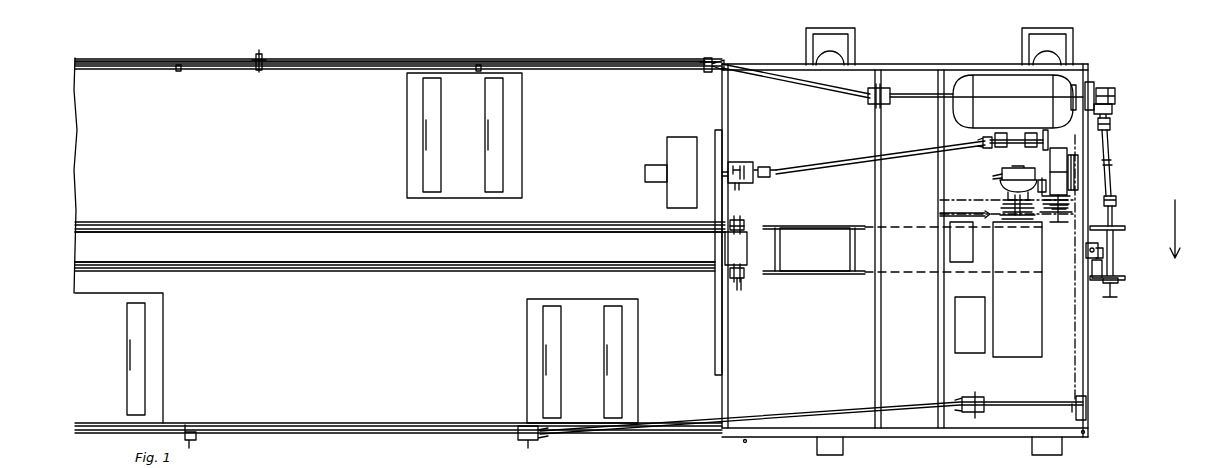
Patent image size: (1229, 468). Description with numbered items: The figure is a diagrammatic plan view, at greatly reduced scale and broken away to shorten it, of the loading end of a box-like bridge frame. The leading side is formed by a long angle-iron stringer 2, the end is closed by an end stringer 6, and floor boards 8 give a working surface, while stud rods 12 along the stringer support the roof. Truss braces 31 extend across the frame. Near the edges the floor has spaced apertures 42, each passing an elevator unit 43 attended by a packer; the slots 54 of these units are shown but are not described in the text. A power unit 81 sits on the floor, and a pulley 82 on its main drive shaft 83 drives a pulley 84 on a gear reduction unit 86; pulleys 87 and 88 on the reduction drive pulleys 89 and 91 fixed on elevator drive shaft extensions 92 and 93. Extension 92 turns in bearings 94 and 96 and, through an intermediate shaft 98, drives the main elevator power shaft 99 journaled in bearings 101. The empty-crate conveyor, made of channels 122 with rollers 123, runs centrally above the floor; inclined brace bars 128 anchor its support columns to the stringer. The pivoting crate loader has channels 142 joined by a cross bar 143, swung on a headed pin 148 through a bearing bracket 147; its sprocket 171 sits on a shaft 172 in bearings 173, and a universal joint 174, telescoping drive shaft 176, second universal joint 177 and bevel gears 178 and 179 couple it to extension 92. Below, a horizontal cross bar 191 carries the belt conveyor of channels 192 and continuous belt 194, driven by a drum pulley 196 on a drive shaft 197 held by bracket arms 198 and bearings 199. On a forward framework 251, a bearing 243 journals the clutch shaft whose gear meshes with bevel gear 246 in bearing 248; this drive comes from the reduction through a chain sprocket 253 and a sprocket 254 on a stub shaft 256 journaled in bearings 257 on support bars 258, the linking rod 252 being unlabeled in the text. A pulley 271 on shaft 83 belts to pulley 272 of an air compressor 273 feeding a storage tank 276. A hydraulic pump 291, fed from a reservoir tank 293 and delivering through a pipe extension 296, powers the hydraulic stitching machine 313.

The angle-iron stringer 2 is at (142, 70).
The end stringer 6 is at (1088, 350).
The floor boards 8 is at (398, 379).
The stud rod 12 is at (178, 71).
The truss brace 31 is at (875, 342).
The aperture 42 is at (522, 123).
The elevator unit 43 is at (478, 163).
The bar 54 is at (492, 180).
The power unit 81 is at (1017, 289).
The pulley 82 is at (1005, 210).
The main drive shaft 83 is at (1018, 223).
The pulley 84 is at (1068, 212).
The gear reduction unit 86 is at (1059, 171).
The pulley 87 is at (1059, 161).
The pulley 88 is at (1078, 186).
The pulley 89 is at (1071, 93).
The pulley 91 is at (1076, 415).
The elevator drive shaft extension 92 is at (1000, 97).
The elevator drive shaft extension 93 is at (1008, 403).
The bearing 94 is at (1089, 88).
The bearing 96 is at (889, 102).
The intermediate shaft 98 is at (820, 88).
The main elevator power shaft 99 is at (99, 69).
The bearing 101 is at (260, 71).
The channel 122 is at (835, 227).
The roller 123 is at (790, 227).
The brace bar 128 is at (728, 134).
The channel 142 is at (1120, 282).
The cross bar 143 is at (1092, 274).
The bearing bracket 147 is at (1090, 258).
The headed pin 148 is at (1100, 251).
The sprocket 171 is at (1110, 300).
The shaft 172 is at (1120, 270).
The bearing 173 is at (1125, 216).
The universal joint 174 is at (1116, 201).
The drive shaft 176 is at (1110, 171).
The universal joint 177 is at (1111, 126).
The bevel gear 178 is at (1114, 109).
The bevel gear 179 is at (1116, 93).
The horizontal cross bar 191 is at (718, 218).
The channel 192 is at (348, 222).
The continuous belt 194 is at (400, 247).
The drum pulley 196 is at (739, 248).
The drive shaft 197 is at (742, 227).
The bracket arm 198 is at (745, 238).
The bearing 199 is at (740, 291).
The bearing 243 is at (761, 179).
The bevel gear 246 is at (746, 168).
The bearing 248 is at (724, 180).
The framework 251 is at (734, 163).
The rod 252 is at (832, 173).
The chain sprocket 253 is at (1044, 189).
The sprocket 254 is at (1048, 139).
The stub shaft 256 is at (1016, 147).
The bearing 257 is at (1000, 133).
The support bar 258 is at (991, 149).
The pulley 271 is at (1036, 213).
The pulley 272 is at (963, 213).
The air compressor 273 is at (962, 242).
The storage tank 276 is at (1013, 101).
The hydraulic pump 291 is at (1018, 183).
The reservoir tank 293 is at (970, 325).
The pipe extension 296 is at (982, 179).
The hydraulic stitching machine 313 is at (675, 137).